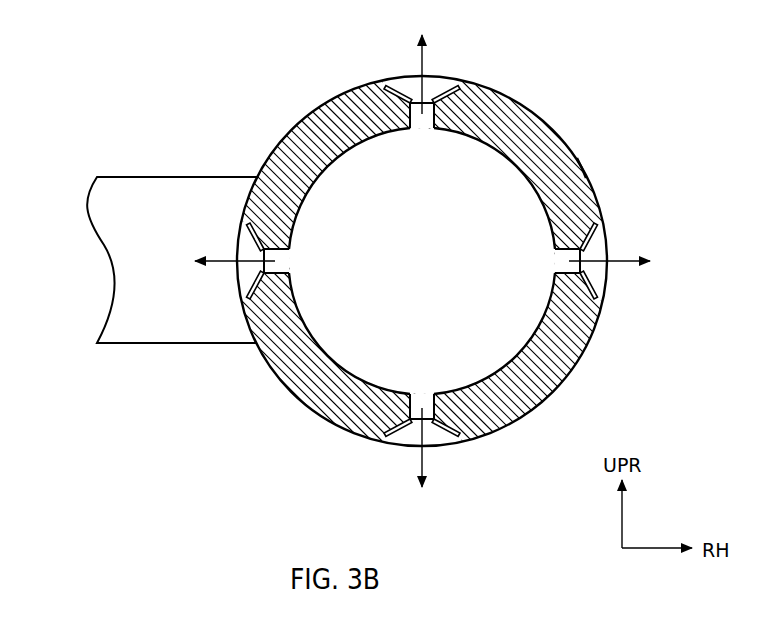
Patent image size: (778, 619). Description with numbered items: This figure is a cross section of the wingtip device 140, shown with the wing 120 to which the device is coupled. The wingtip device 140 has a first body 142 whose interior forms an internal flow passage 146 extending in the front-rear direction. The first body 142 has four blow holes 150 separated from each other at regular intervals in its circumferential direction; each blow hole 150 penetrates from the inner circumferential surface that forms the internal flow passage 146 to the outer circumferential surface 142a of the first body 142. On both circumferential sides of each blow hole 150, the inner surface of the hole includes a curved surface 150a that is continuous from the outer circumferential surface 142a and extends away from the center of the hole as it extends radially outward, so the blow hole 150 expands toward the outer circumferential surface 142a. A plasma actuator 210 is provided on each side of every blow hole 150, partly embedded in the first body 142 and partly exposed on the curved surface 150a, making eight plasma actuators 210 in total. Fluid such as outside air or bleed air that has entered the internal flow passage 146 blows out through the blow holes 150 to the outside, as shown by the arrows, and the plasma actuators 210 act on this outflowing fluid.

The wing 120 is at (157, 271).
The wingtip device 140 is at (535, 114).
The first body 142 is at (570, 150).
The outer circumferential surface 142a is at (606, 157).
The internal flow passage 146 is at (439, 274).
The blow hole 150 is at (420, 122).
The curved surface 150a is at (386, 90).
The plasma actuator 210 is at (403, 91).